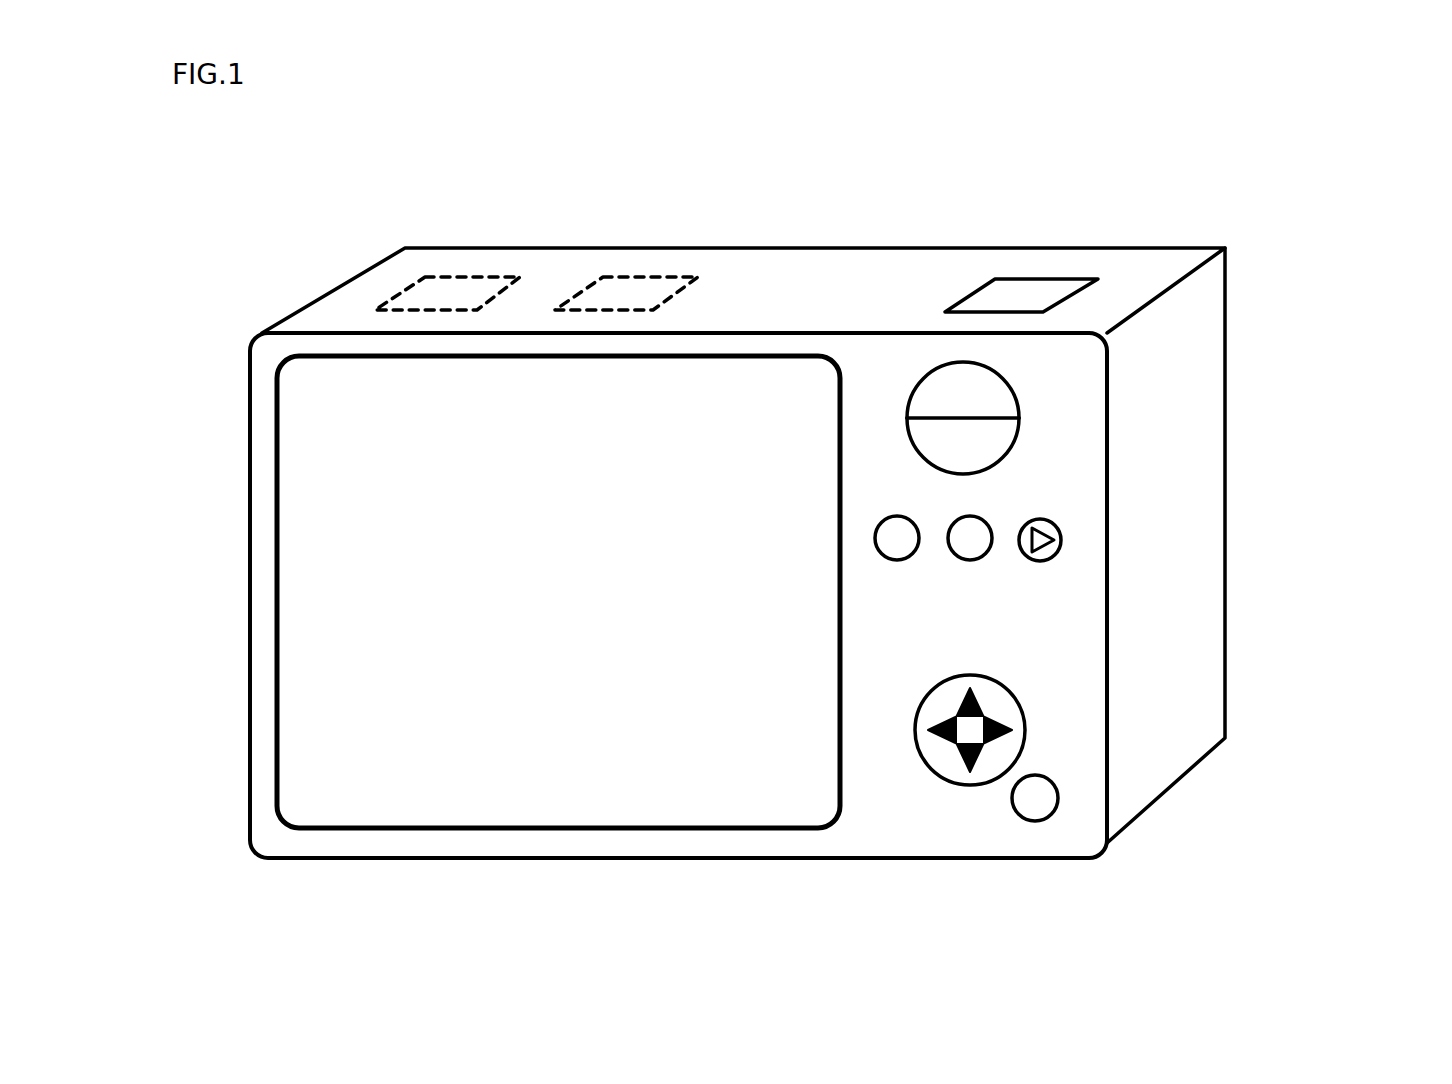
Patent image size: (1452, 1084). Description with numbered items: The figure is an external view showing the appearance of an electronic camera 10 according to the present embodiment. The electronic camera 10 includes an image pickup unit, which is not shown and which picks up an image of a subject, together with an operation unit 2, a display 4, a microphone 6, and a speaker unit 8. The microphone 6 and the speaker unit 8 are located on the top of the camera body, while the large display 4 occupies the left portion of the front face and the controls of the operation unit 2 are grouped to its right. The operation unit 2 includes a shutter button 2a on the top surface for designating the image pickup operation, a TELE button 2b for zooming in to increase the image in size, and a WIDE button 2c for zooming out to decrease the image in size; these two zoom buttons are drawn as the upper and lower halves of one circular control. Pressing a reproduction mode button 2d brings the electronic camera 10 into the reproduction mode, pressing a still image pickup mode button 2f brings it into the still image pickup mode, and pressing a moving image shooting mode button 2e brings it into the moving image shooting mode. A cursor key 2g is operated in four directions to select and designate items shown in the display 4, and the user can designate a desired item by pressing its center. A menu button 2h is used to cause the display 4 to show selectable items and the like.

The electronic camera 10 is at (893, 108).
The operation unit 2 is at (1228, 158).
The display 4 is at (278, 595).
The microphone 6 is at (460, 277).
The speaker unit 8 is at (642, 277).
The shutter button 2a is at (1032, 278).
The TELE button 2b is at (1017, 393).
The WIDE button 2c is at (1013, 450).
The reproduction mode button 2d is at (1061, 542).
The moving image shooting mode button 2e is at (980, 558).
The still image pickup mode button 2f is at (905, 559).
The cursor key 2g is at (1025, 728).
The menu button 2h is at (1058, 805).